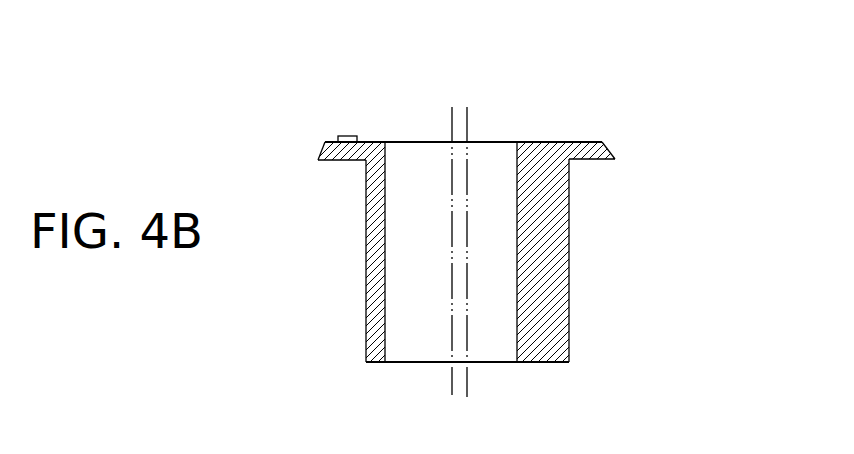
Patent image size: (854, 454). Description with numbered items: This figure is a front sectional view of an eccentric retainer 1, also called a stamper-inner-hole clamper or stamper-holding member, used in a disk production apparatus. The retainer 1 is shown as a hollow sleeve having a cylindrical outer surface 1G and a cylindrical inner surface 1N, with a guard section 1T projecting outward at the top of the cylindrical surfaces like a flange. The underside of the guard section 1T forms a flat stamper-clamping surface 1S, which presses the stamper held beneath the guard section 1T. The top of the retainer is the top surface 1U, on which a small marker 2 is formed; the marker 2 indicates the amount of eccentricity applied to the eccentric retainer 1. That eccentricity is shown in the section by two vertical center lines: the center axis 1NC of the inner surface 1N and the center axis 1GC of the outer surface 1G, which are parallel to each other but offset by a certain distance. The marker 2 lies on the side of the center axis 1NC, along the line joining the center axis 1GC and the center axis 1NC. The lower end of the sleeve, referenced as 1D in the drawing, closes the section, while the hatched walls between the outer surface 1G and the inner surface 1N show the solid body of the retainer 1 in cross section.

The eccentric retainer 1 is at (743, 65).
The marker 2 is at (338, 136).
The top surface 1U is at (542, 142).
The guard section 1T is at (603, 142).
The stamper-clamping surface 1S is at (582, 159).
The cylindrical outer surface 1G is at (569, 258).
The bottom end face 1D is at (540, 363).
The cylindrical inner surface 1N is at (517, 293).
The center axis of the inner surface 1NC is at (450, 297).
The center axis of the outer surface 1GC is at (462, 337).